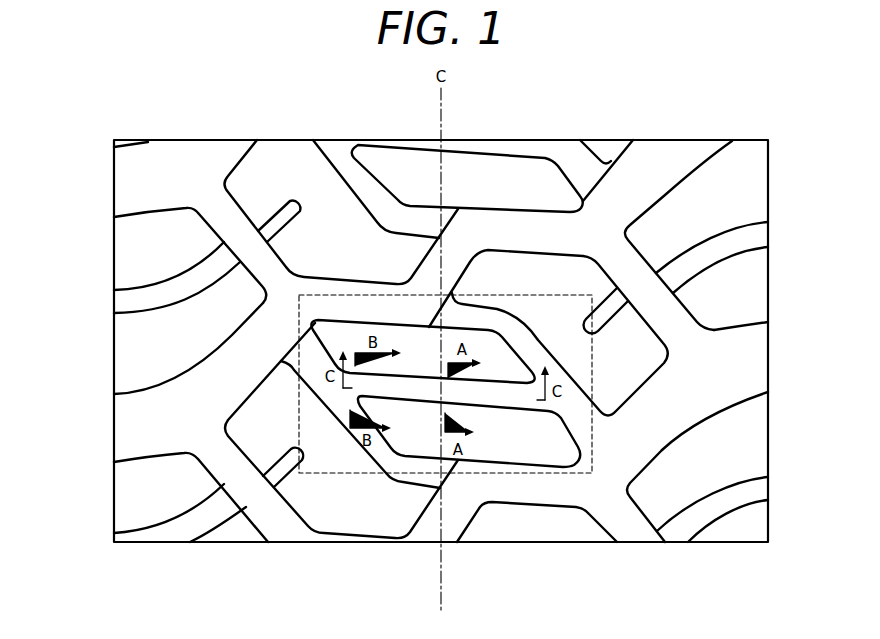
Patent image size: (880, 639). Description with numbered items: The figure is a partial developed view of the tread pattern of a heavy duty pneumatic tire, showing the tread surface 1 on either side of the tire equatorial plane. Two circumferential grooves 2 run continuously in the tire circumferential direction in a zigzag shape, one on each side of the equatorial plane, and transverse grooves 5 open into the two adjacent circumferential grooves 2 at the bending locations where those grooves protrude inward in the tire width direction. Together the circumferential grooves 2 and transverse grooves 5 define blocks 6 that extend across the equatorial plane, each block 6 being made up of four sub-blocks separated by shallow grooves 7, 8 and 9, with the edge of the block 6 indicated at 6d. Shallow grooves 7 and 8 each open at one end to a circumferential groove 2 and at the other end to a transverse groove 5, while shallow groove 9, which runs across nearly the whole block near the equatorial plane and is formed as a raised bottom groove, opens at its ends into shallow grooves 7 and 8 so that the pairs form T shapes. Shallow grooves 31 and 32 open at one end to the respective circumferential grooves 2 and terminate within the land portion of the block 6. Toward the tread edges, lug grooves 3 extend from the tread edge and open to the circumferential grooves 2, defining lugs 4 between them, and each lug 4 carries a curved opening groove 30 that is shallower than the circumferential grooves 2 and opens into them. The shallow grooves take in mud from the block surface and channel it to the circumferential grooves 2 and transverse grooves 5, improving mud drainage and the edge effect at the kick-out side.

The tread surface 1 is at (660, 116).
The circumferential groove 2 is at (271, 512).
The lug groove 3 is at (127, 433).
The lug 4 is at (146, 258).
The transverse groove 5 is at (521, 230).
The block 6 is at (323, 238).
The block side wall edge 6d is at (620, 394).
The shallow groove 7 is at (352, 173).
The shallow groove 8 is at (575, 162).
The shallow groove 9 is at (516, 398).
The opening groove 30 is at (126, 301).
The shallow groove 31 is at (285, 210).
The shallow groove 32 is at (600, 327).